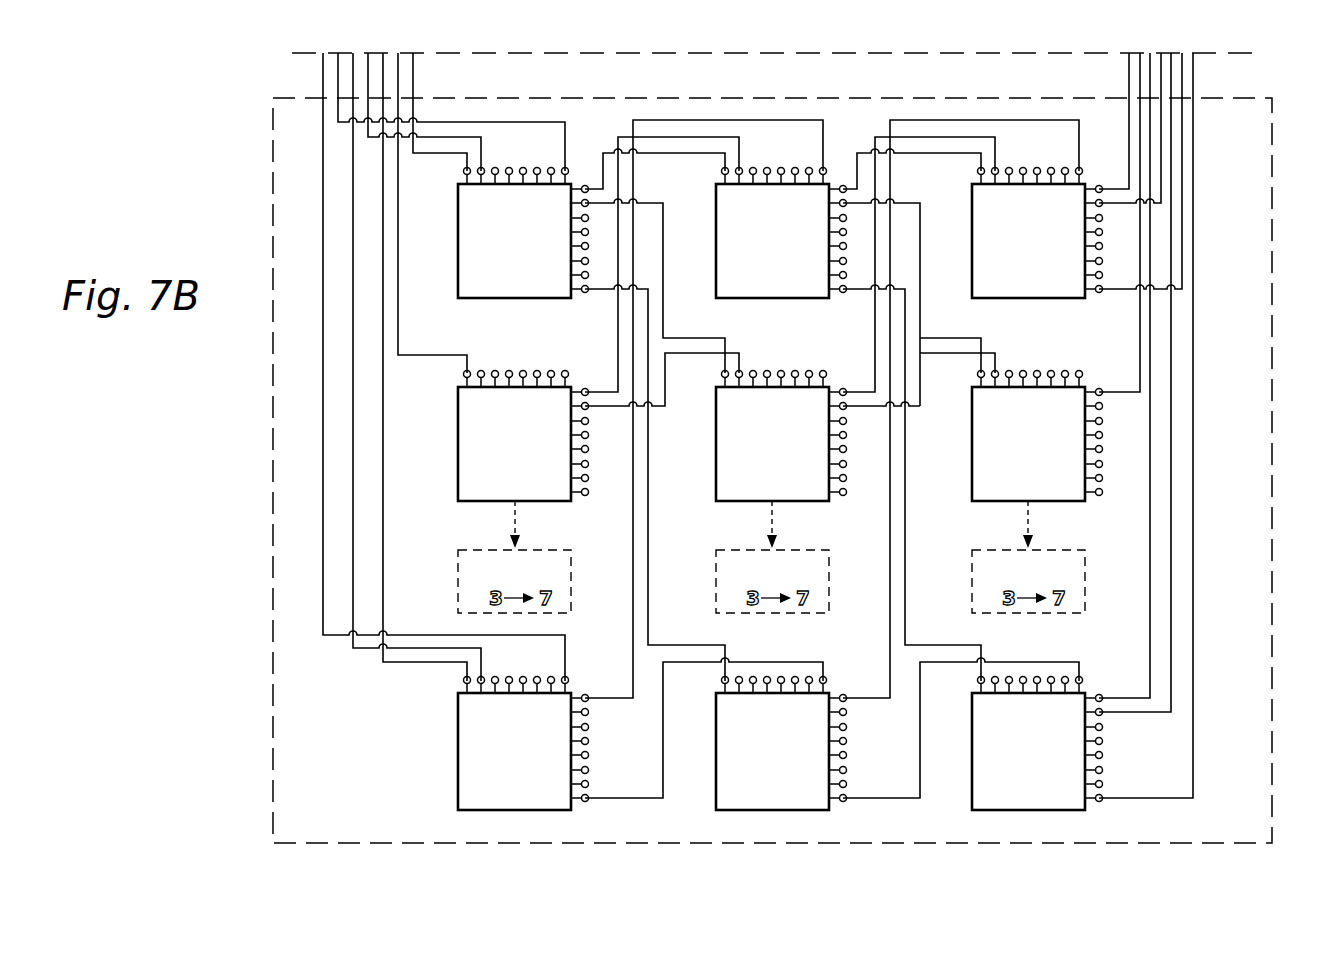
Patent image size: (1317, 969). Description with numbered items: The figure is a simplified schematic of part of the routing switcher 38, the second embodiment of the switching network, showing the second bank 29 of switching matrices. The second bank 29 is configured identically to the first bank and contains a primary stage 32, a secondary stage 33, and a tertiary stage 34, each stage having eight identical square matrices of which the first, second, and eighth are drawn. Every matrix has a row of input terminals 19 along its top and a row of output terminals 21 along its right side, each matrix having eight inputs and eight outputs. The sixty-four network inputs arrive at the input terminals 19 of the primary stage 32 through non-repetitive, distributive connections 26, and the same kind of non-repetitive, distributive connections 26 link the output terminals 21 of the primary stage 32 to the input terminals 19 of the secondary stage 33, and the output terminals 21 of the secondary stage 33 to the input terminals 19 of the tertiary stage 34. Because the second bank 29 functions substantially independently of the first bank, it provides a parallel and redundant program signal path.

The input terminals 19 is at (465, 174).
The output terminals 21 is at (585, 292).
The non-repetitive, distributive connections 26 is at (445, 105).
The second bank 29 is at (482, 98).
The primary stage 32 is at (532, 144).
The secondary stage 33 is at (791, 156).
The tertiary stage 34 is at (1031, 139).
The routing switcher 38 is at (246, 469).